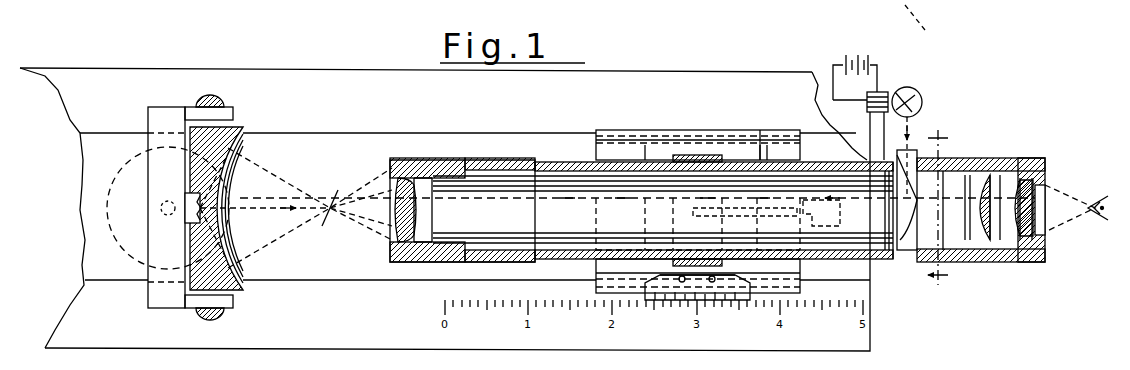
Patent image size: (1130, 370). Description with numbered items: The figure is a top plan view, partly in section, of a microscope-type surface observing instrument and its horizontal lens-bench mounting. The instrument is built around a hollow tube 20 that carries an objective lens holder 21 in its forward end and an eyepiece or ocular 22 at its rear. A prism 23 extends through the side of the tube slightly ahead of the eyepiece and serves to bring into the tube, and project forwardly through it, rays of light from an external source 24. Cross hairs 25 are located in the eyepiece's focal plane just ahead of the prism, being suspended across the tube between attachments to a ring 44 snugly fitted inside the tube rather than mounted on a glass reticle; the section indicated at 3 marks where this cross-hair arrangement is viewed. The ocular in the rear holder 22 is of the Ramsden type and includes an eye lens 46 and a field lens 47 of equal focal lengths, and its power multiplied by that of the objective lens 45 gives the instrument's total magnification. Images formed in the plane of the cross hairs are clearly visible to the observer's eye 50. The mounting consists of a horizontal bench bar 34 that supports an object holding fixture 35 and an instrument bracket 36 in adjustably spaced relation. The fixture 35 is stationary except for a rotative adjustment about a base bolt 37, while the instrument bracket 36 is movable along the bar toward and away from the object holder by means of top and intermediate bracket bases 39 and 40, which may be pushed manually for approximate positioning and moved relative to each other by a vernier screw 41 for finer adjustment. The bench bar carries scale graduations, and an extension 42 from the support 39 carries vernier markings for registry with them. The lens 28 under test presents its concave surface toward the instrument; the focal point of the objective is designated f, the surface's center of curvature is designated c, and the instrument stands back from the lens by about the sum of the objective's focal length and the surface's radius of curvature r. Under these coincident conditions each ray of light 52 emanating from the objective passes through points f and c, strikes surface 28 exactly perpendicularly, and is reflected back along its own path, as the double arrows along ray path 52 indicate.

The hollow tube 20 is at (545, 162).
The objective lens holder 21 is at (420, 160).
The eyepiece or ocular 22 is at (1005, 165).
The prism 23 is at (906, 212).
The external source 24 is at (915, 90).
The cross hairs 25 is at (888, 232).
The lens 28 is at (240, 273).
The section line 3- 3 is at (938, 209).
The bench bar 34 is at (352, 266).
The object holding fixture 35 is at (158, 120).
The instrument bracket 36 is at (700, 155).
The base bolt 37 is at (162, 213).
The top bracket base 39 is at (745, 148).
The intermediate bracket base 40 is at (676, 130).
The vernier screw 41 is at (834, 218).
The extension 42 is at (688, 292).
The ring 44 is at (888, 246).
The objective lens 45 is at (395, 222).
The eye lens 46 is at (1035, 218).
The field lens 47 is at (1000, 258).
The observer's eye 50 is at (1093, 205).
The ray of light 52 is at (598, 204).
The focal point f is at (350, 186).
The center of curvature c is at (327, 241).
The radius of curvature r is at (266, 209).